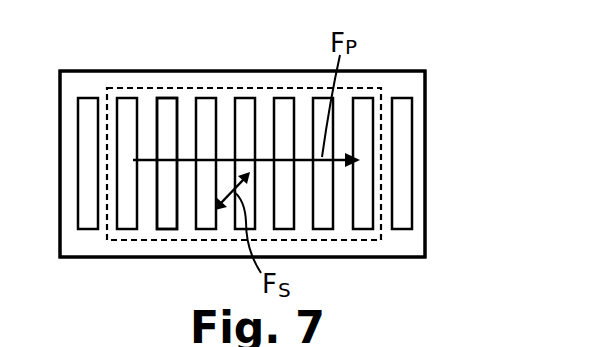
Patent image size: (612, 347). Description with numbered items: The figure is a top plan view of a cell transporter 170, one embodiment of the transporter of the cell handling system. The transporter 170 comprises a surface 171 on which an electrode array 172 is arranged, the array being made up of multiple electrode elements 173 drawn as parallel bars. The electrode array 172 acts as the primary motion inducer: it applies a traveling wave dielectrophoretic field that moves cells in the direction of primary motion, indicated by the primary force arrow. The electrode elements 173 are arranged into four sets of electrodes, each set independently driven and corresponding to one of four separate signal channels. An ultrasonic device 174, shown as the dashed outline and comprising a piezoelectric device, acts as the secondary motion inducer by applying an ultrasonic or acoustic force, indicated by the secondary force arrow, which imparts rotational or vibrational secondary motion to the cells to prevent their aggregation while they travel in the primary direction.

The transporter 170 is at (287, 62).
The surface 171 is at (98, 85).
The electrode array 172 is at (374, 116).
The electrode elements 173 is at (168, 100).
The ultrasonic device 174 is at (367, 238).